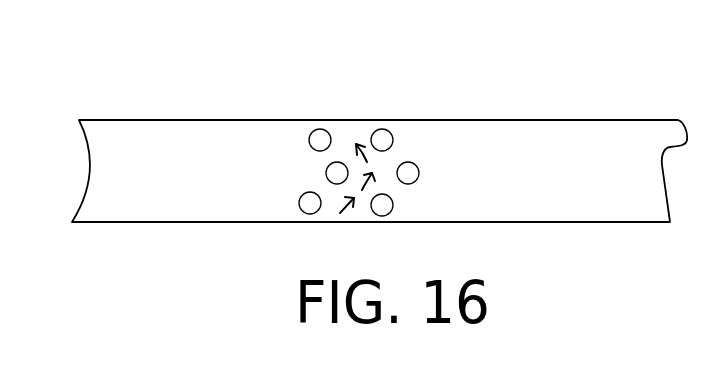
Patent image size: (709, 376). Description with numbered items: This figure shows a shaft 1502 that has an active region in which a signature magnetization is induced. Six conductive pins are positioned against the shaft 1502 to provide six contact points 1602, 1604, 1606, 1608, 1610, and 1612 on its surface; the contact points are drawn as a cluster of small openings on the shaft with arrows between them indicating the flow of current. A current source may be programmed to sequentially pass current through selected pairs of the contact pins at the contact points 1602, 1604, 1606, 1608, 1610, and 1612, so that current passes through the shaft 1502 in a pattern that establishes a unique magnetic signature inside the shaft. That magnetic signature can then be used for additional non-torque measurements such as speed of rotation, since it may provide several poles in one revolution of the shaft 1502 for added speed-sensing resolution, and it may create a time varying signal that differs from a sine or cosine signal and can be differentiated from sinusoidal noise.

The shaft 1502 is at (582, 120).
The contact point 1602 is at (302, 211).
The contact point 1604 is at (327, 177).
The contact point 1606 is at (311, 132).
The contact point 1608 is at (391, 135).
The contact point 1610 is at (419, 173).
The contact point 1612 is at (390, 213).